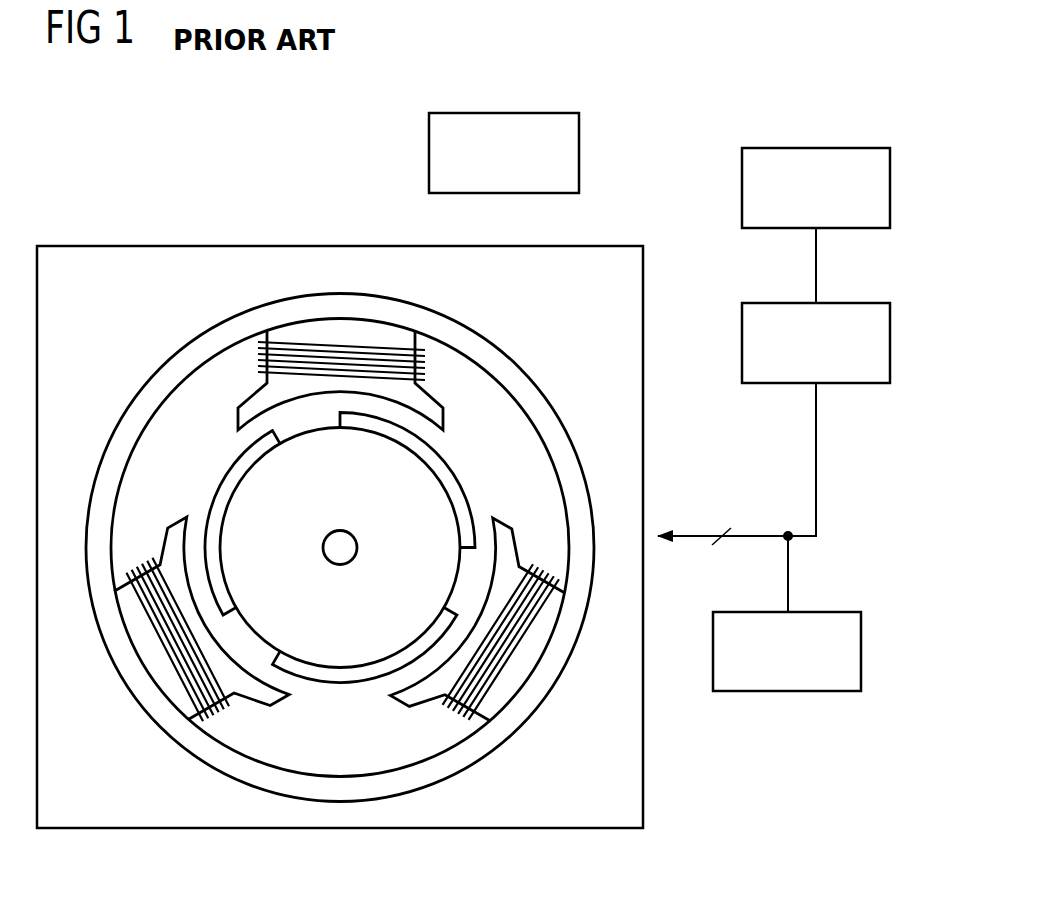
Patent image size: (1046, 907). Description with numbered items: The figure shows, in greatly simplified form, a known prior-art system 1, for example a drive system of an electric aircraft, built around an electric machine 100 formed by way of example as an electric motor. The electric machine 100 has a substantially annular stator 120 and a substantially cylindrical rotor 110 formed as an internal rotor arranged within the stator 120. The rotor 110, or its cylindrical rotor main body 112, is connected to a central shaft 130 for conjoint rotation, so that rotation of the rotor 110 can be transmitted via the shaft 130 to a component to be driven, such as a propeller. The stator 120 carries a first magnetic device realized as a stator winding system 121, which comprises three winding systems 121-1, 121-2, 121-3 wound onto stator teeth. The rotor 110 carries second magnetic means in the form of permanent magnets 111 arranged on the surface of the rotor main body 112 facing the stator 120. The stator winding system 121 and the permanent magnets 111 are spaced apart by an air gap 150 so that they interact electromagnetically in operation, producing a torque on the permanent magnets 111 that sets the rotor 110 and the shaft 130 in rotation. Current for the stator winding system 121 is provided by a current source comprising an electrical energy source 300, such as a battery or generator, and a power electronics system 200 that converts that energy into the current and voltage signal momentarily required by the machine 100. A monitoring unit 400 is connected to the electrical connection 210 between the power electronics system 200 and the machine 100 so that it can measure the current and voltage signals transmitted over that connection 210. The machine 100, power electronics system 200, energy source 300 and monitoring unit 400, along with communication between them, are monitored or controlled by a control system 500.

The system 1 is at (150, 143).
The electric machine 100 is at (185, 246).
The rotor 110 is at (327, 572).
The permanent magnets 111 is at (392, 440).
The rotor main body 112 is at (232, 503).
The stator 120 is at (223, 331).
The stator winding system 121 is at (342, 489).
The first winding system 121-1 is at (343, 333).
The second winding system 121-2 is at (163, 653).
The third winding system 121-3 is at (524, 657).
The shaft 130 is at (358, 548).
The air gap 150 is at (250, 437).
The power electronics system 200 is at (742, 343).
The electrical connection 210 is at (816, 459).
The electrical energy source 300 is at (742, 190).
The monitoring unit 400 is at (787, 692).
The control system 500 is at (429, 152).